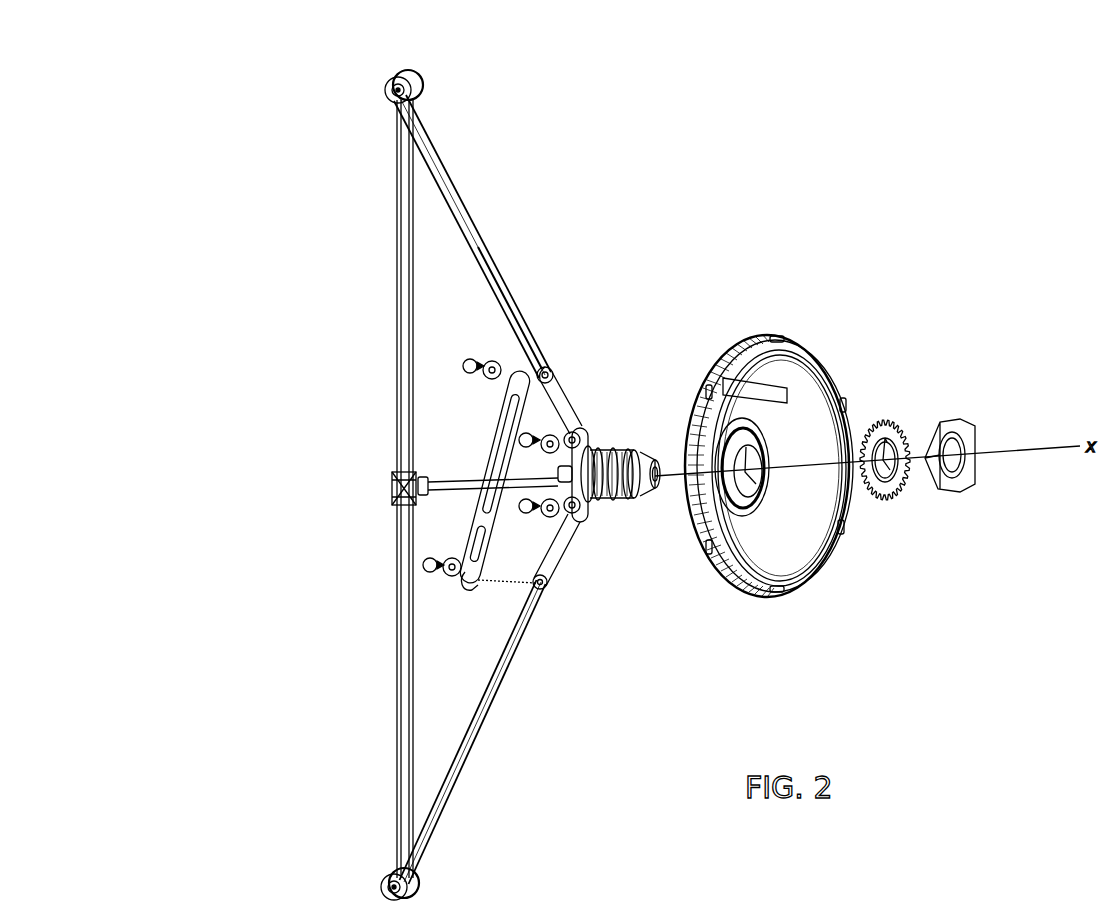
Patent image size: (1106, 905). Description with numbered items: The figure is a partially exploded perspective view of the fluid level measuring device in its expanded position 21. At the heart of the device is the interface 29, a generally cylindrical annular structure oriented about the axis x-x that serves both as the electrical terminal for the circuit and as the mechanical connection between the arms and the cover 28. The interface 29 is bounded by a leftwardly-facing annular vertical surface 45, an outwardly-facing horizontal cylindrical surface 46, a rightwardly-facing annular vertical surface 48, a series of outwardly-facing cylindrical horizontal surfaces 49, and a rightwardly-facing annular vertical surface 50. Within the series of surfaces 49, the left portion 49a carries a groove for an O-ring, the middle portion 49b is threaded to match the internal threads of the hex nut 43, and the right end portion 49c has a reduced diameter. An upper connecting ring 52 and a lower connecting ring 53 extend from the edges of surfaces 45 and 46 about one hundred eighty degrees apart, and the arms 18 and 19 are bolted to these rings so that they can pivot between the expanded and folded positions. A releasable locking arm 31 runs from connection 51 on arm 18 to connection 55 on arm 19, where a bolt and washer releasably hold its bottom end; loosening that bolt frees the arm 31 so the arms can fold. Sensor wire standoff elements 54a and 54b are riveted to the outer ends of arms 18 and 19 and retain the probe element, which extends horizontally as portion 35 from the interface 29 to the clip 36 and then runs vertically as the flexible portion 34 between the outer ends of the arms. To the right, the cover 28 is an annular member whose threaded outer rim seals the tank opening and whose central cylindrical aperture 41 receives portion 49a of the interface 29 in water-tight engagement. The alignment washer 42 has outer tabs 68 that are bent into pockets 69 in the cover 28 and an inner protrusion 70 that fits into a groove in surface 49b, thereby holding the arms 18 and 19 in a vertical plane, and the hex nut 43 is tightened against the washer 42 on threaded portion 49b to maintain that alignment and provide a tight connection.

The arm 18 is at (475, 218).
The arm 19 is at (478, 745).
The expanded position 21 is at (300, 365).
The cover 28 is at (785, 282).
The interface 29 is at (648, 396).
The releasable locking arm 31 is at (490, 435).
The vertically-extending portion 34 is at (390, 292).
The horizontally extending portion 35 is at (452, 470).
The clip 36 is at (390, 500).
The central cylindrical aperture 41 is at (770, 492).
The alignment washer 42 is at (893, 392).
The hex nut 43 is at (957, 400).
The leftwardly-facing annular vertical surface 45 is at (572, 468).
The outwardly-facing horizontal cylindrical surface 46 is at (578, 436).
The rightwardly-facing annular vertical surface 48 is at (603, 443).
The outwardly-facing cylindrical horizontal surfaces 49 is at (632, 444).
The left portion of surface 49 49a is at (600, 502).
The middle portion of surface 49 49b is at (612, 506).
The right end portion of surface 49 49c is at (630, 498).
The rightwardly-facing annular vertical surface 50 is at (640, 462).
The connection 51 is at (520, 312).
The upper connecting ring 52 is at (555, 372).
The lower connecting ring 53 is at (553, 590).
The sensor wire standoff element 54a is at (390, 90).
The sensor wire standoff element 54b is at (380, 888).
The connection 55 is at (525, 588).
The outer tabs 68 is at (903, 412).
The pockets 69 is at (752, 424).
The inner protrusion 70 is at (893, 496).